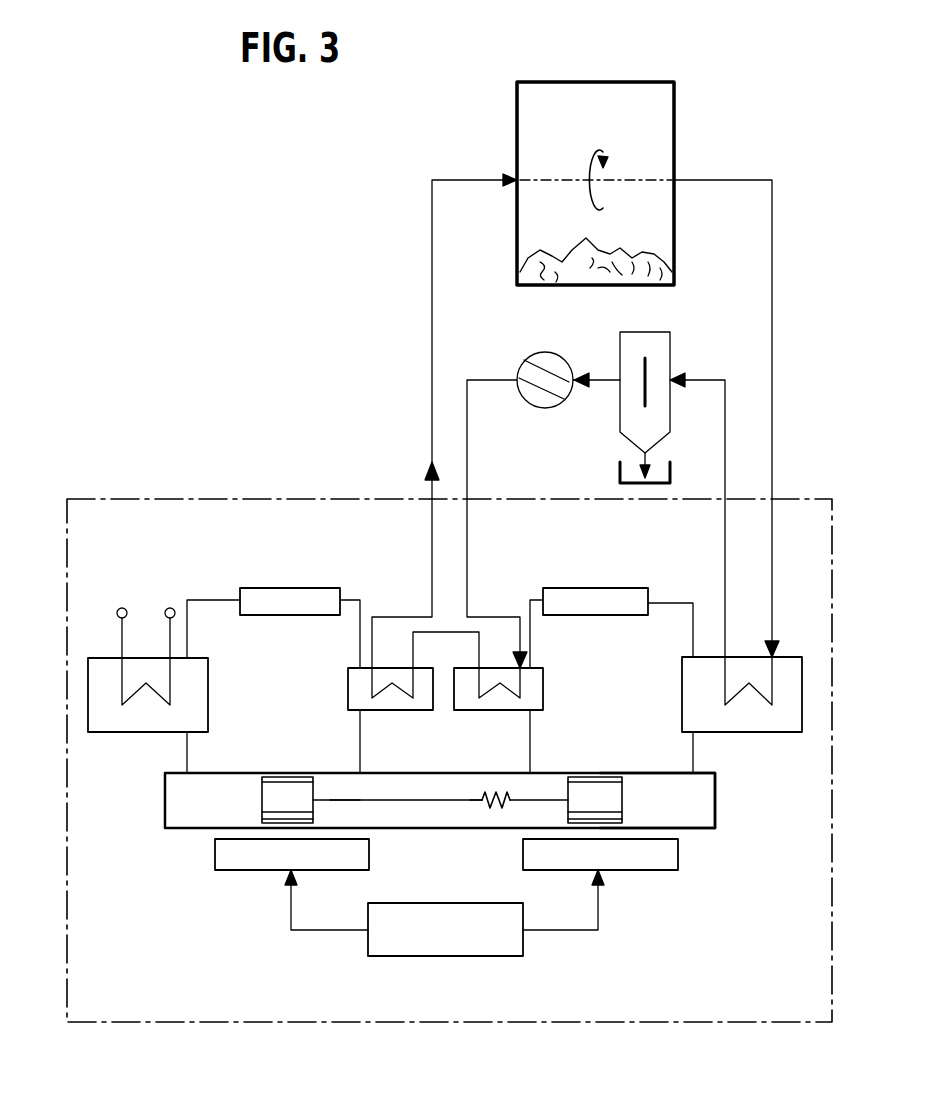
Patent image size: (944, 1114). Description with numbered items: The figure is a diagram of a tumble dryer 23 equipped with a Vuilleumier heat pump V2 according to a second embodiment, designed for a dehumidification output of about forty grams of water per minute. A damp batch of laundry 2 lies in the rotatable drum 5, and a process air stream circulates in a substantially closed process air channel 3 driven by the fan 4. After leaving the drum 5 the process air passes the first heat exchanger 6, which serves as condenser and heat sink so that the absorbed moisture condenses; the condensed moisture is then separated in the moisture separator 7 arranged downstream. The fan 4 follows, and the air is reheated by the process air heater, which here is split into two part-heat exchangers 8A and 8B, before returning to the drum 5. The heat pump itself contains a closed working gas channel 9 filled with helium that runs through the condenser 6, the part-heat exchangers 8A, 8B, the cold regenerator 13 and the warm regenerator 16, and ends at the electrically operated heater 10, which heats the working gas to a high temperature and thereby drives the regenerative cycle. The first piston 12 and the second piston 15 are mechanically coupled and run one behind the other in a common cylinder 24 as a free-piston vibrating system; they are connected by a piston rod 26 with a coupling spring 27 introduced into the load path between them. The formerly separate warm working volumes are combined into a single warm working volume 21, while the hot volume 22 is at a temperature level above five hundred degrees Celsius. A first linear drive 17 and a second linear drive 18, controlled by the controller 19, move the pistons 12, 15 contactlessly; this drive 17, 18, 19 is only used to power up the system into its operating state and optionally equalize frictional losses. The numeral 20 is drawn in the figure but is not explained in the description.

The batch of laundry 2 is at (640, 272).
The process air channel 3 is at (432, 272).
The fan 4 is at (530, 356).
The drum 5 is at (675, 118).
The first heat exchanger 6 is at (786, 732).
The moisture separator 7 is at (672, 346).
The first part-heat exchanger 8A is at (545, 688).
The second part-heat exchanger 8B is at (348, 687).
The working gas channel 9 is at (212, 600).
The heater 10 is at (122, 732).
The first piston 12 is at (597, 791).
The cold regenerator 13 is at (590, 588).
The second piston 15 is at (286, 793).
The warm regenerator 16 is at (300, 588).
The first linear drive 17 is at (659, 862).
The second linear drive 18 is at (232, 858).
The controller 19 is at (488, 945).
The housing 20 is at (702, 795).
The warm working volume 21 is at (348, 792).
The hot volume 22 is at (167, 804).
The tumble dryer 23 is at (323, 206).
The common cylinder 24 is at (717, 815).
The piston rod 26 is at (421, 829).
The coupling spring 27 is at (497, 793).
The Vuilleumier heat pump V2 is at (250, 499).